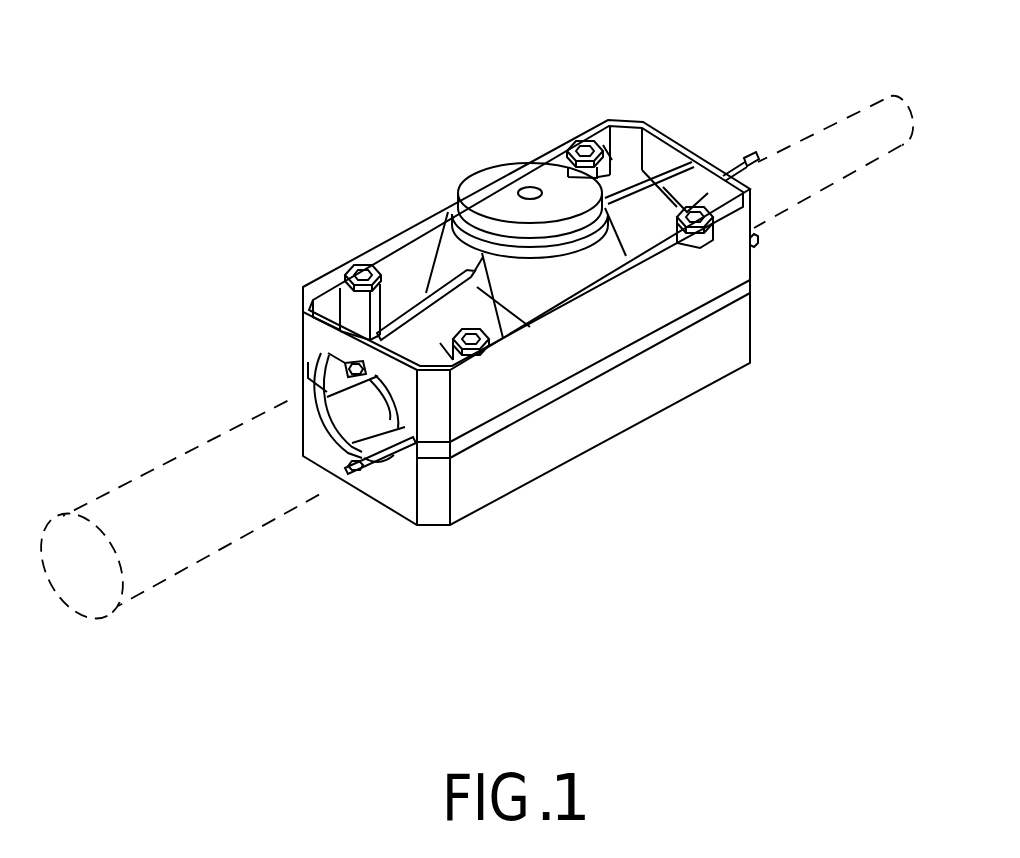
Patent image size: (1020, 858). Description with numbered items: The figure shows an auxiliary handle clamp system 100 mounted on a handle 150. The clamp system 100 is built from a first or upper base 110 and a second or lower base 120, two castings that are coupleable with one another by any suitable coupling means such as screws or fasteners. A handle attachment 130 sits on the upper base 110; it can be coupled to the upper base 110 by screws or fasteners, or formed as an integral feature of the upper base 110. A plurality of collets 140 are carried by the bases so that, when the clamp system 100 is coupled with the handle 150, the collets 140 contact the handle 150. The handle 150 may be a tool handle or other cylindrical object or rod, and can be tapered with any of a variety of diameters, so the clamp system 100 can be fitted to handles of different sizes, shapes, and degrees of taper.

The auxiliary handle clamp system 100 is at (162, 134).
The upper base 110 is at (560, 360).
The lower base 120 is at (683, 383).
The handle attachment 130 is at (503, 170).
The collets 140 is at (750, 158).
The handle 150 is at (845, 131).